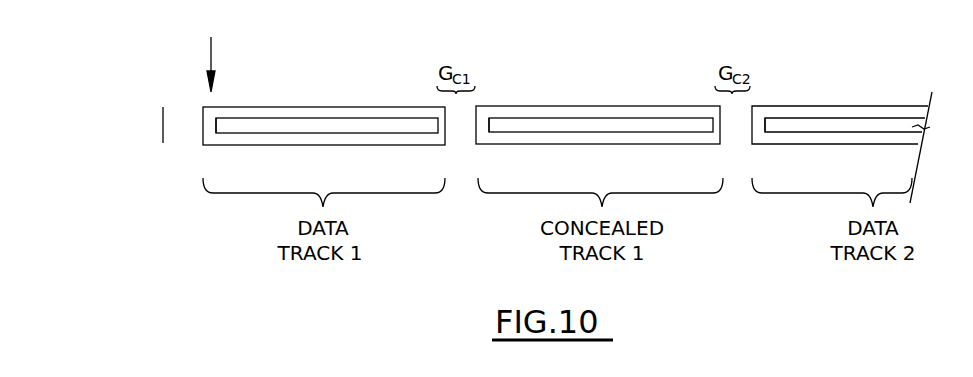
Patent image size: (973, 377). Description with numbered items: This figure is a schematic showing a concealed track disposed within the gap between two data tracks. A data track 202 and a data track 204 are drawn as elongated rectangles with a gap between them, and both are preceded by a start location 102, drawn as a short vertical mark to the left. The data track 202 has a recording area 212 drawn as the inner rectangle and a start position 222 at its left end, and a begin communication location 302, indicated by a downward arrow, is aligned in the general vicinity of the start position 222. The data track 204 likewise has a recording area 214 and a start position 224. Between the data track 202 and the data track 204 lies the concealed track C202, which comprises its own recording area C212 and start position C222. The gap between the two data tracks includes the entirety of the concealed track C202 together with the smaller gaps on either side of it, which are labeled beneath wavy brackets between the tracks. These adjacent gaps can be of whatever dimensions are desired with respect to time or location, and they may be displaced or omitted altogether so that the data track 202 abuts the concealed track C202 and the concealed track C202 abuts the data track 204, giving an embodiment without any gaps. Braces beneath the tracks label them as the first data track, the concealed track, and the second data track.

The start location 102 is at (163, 128).
The begin communication location 302 is at (211, 45).
The data track 202 is at (230, 115).
The recording area 212 is at (250, 126).
The start position 222 is at (217, 126).
The concealed track C202 is at (510, 113).
The recording area C212 is at (537, 127).
The start position C222 is at (497, 127).
The data track 204 is at (787, 113).
The recording area 214 is at (810, 127).
The start position 224 is at (767, 124).